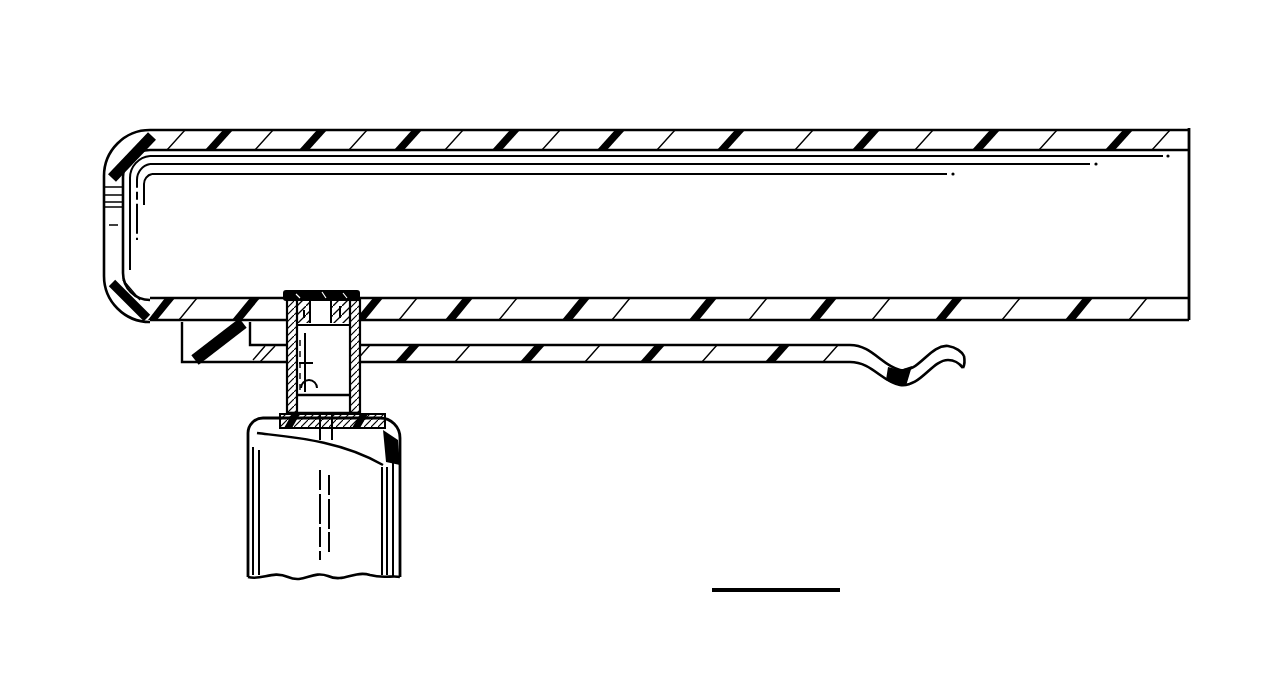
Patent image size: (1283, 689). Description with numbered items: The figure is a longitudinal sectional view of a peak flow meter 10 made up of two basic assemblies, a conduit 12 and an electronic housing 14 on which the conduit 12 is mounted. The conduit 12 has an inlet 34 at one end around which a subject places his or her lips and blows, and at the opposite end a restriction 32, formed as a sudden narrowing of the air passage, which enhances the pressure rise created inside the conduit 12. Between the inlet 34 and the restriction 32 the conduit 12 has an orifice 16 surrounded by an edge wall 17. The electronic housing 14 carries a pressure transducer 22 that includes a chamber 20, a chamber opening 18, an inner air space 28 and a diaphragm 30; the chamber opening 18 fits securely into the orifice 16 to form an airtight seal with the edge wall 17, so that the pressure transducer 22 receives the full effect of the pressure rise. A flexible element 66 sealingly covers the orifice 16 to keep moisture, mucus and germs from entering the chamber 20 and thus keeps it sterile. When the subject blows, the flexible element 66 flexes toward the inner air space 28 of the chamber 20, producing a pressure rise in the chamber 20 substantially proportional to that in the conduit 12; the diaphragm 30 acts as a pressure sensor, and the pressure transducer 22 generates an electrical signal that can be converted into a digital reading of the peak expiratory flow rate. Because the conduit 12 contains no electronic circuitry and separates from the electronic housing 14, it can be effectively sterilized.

The peak flow meter 10 is at (954, 78).
The conduit 12 is at (735, 133).
The electronic housing 14 is at (398, 524).
The orifice 16 is at (328, 290).
The edge wall 17 is at (371, 300).
The chamber opening 18 is at (290, 311).
The chamber 20 is at (358, 376).
The pressure transducer 22 is at (374, 393).
The inner air space 28 is at (291, 368).
The diaphragm 30 is at (290, 392).
The restriction 32 is at (105, 182).
The inlet 34 is at (1192, 137).
The flexible element 66 is at (303, 290).